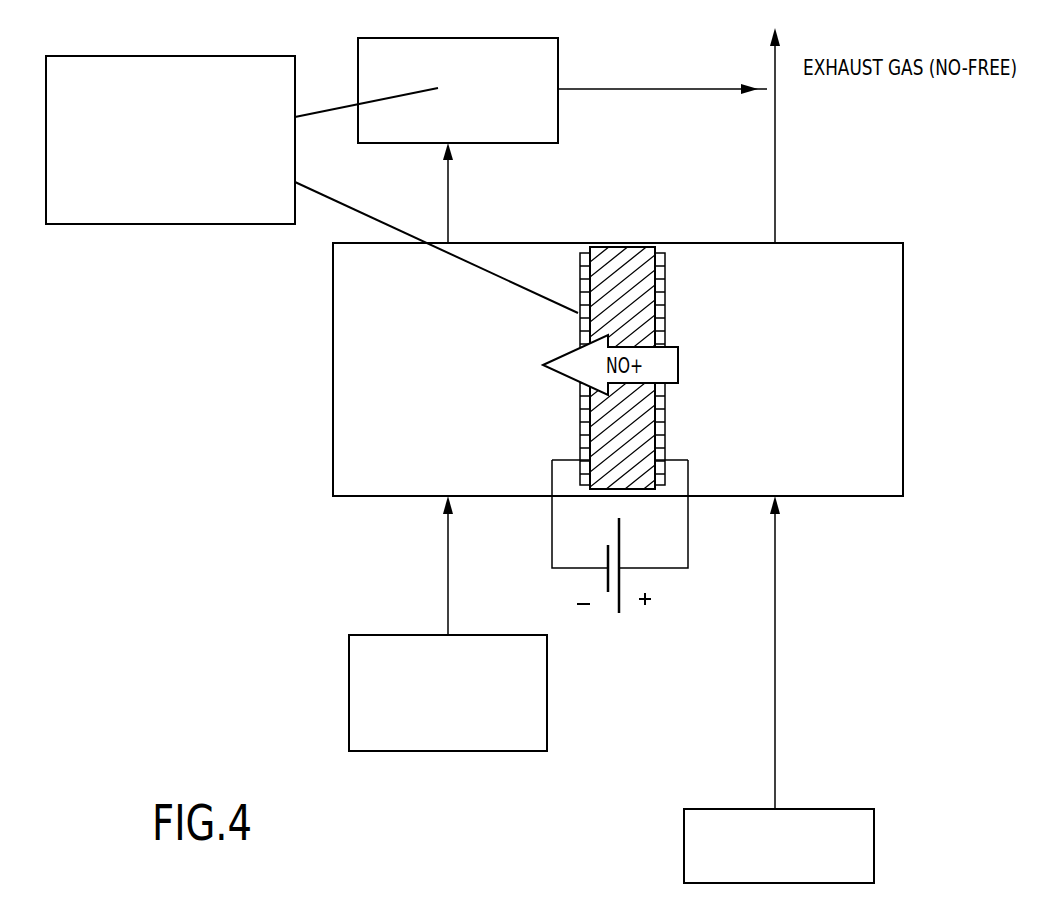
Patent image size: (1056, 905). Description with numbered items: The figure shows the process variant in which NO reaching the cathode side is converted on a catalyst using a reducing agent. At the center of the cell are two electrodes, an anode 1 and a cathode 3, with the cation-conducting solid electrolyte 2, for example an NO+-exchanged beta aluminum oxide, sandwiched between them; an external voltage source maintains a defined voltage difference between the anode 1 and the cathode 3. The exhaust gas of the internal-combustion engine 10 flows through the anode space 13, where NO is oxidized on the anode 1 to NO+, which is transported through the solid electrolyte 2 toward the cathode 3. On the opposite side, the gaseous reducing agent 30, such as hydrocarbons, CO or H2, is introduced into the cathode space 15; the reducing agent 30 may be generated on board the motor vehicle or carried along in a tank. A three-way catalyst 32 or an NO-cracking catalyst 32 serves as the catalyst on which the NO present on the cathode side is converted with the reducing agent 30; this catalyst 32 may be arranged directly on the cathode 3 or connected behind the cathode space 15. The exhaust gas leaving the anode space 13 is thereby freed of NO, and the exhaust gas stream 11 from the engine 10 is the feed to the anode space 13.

The anode 1 is at (665, 284).
The solid electrolyte 2 is at (645, 258).
The cathode 3 is at (580, 275).
The internal-combustion engine 10 is at (684, 852).
The exhaust gas 11 is at (916, 570).
The anode space 13 is at (872, 375).
The cathode space 15 is at (355, 358).
The reducing agent 30 is at (349, 715).
The three-way catalyst or NO-cracking catalyst 32 is at (118, 225).